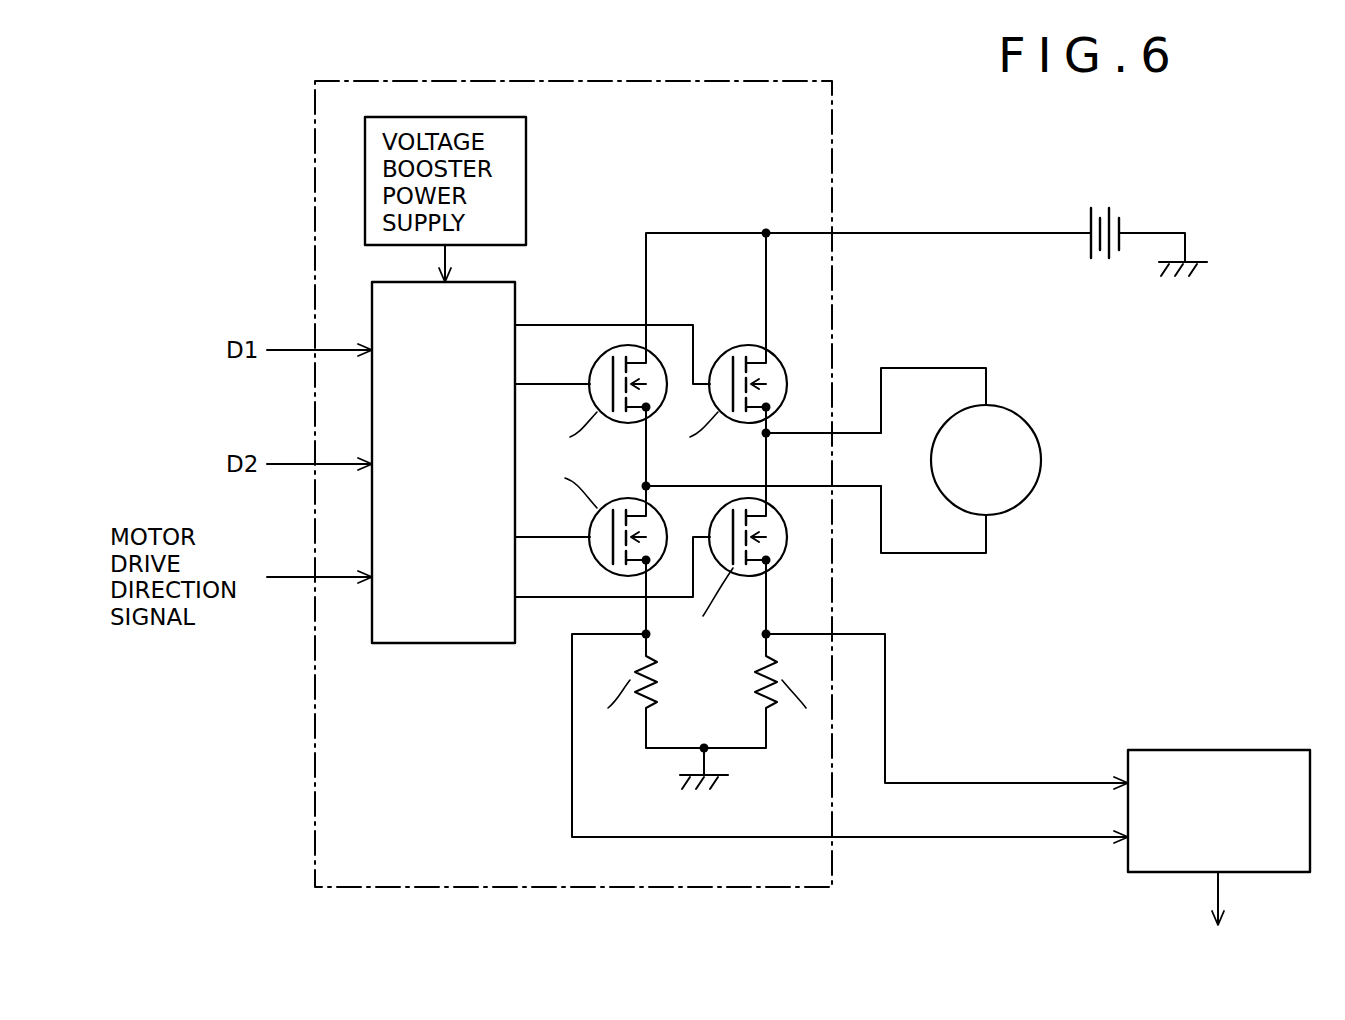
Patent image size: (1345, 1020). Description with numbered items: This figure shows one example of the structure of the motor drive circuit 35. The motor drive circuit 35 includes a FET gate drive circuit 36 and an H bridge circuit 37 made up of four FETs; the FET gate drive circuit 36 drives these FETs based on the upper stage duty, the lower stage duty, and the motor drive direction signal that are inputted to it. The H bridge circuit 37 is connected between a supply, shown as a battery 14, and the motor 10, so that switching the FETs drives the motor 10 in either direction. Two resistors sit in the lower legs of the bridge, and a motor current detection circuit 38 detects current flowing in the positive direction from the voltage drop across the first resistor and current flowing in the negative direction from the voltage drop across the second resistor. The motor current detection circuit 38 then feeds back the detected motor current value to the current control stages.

The motor 10 is at (1013, 510).
The battery 14 is at (1127, 216).
The motor drive circuit 35 is at (832, 866).
The FET gate drive circuit 36 is at (516, 298).
The H bridge circuit 37 is at (707, 222).
The motor current detection circuit 38 is at (1216, 748).